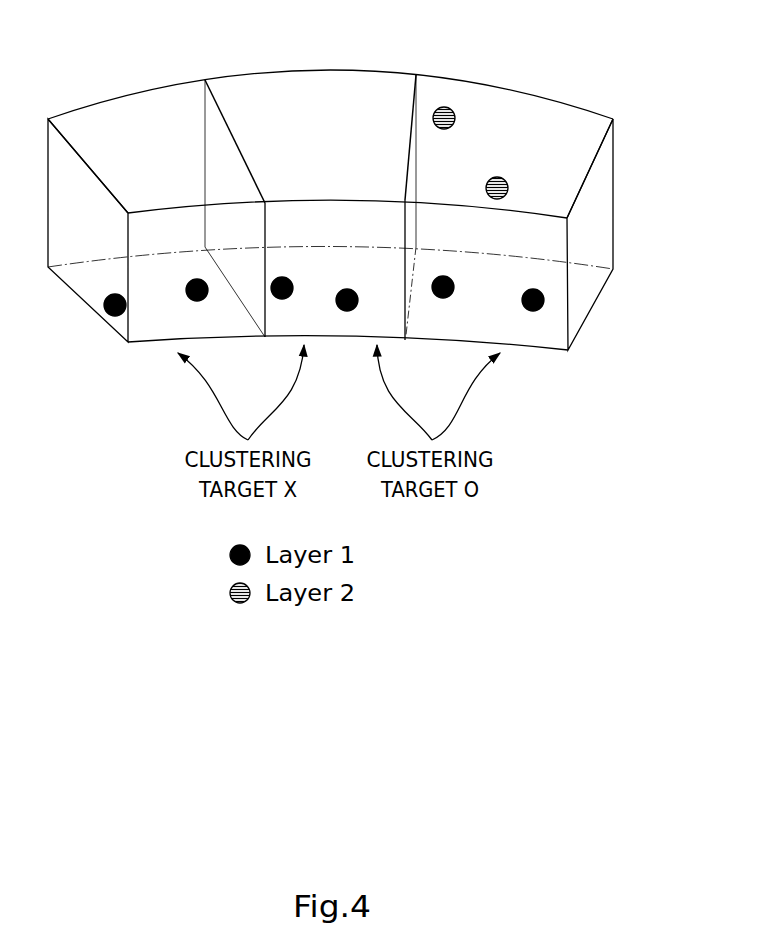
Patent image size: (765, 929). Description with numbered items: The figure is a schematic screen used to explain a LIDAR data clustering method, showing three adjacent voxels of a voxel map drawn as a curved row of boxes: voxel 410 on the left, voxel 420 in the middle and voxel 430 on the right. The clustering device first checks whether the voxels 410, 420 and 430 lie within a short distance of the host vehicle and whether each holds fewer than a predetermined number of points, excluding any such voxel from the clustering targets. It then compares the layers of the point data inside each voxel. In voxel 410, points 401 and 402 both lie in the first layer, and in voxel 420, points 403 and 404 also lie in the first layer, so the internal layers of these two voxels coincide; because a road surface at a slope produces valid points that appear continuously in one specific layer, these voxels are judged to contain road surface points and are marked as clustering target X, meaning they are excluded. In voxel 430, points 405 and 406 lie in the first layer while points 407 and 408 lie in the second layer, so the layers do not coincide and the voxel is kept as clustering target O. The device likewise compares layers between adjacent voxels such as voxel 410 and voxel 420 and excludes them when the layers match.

The voxel 410 is at (118, 98).
The voxel 420 is at (308, 70).
The voxel 430 is at (548, 98).
The point 401 is at (112, 294).
The point 402 is at (199, 279).
The point 403 is at (283, 277).
The point 404 is at (346, 289).
The point 405 is at (443, 276).
The point 406 is at (533, 289).
The point 407 is at (444, 107).
The point 408 is at (508, 188).